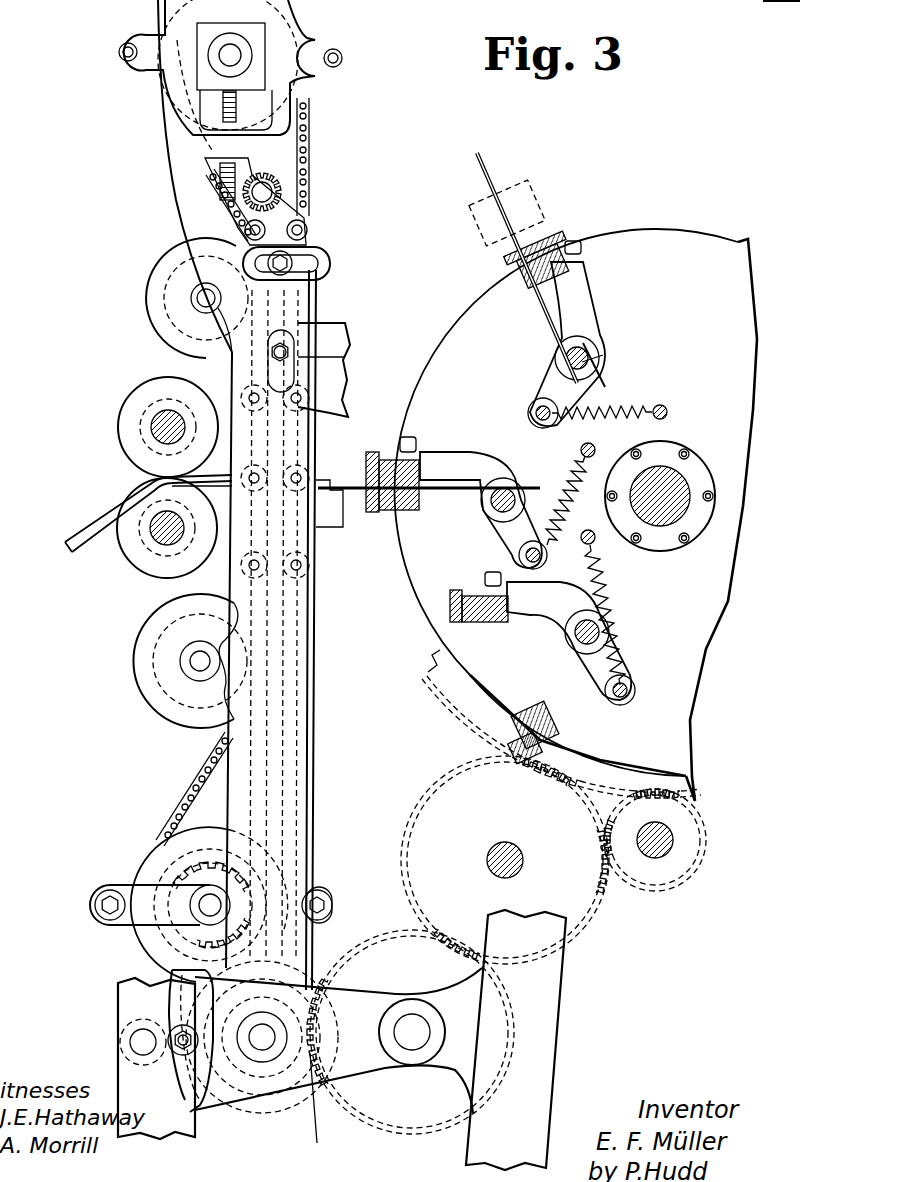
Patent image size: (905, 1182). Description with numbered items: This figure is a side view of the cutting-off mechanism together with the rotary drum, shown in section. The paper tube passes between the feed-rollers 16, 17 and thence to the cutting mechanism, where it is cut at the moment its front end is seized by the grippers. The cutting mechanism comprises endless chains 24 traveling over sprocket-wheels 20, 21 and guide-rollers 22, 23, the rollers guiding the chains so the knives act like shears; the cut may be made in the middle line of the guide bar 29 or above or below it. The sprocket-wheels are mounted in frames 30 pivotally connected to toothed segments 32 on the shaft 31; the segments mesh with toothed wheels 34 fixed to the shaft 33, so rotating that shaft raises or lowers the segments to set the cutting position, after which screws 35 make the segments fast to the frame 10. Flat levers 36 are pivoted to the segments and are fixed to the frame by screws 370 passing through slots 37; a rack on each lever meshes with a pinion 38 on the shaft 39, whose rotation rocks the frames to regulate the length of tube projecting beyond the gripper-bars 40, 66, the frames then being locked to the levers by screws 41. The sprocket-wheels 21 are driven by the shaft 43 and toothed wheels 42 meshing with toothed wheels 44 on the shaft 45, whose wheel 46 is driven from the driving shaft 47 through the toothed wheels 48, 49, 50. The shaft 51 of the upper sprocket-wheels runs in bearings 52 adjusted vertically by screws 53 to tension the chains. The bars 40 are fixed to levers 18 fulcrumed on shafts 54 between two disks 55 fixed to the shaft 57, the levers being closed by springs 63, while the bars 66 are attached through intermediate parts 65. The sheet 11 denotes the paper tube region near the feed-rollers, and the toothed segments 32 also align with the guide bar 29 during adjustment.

The frame 10 is at (342, 746).
The sheet 11 is at (148, 526).
The feed-roller 16 is at (168, 427).
The feed-roller 17 is at (167, 528).
The lever 18 is at (527, 483).
The sprocket-wheel 20 is at (300, 30).
The sprocket-wheel 21 is at (209, 904).
The guide-roller 22 is at (184, 299).
The guide-roller 23 is at (190, 661).
The endless chain 24 is at (242, 472).
The guide bar 29 is at (202, 494).
The frame 30 is at (161, 462).
The shaft 31 is at (412, 1032).
The toothed segment 32 is at (327, 1032).
The shaft 33 is at (143, 1042).
The toothed wheel 34 is at (143, 1032).
The screw 35 is at (180, 1041).
The flat lever 36 is at (288, 618).
The slot 37 is at (300, 357).
The screw 370 is at (300, 383).
The pinion 38 is at (255, 200).
The shaft 39 is at (262, 192).
The gripper-bar 40 is at (470, 417).
The screw 41 is at (295, 258).
The toothed wheel 42 is at (207, 903).
The shaft 43 is at (210, 905).
The toothed wheel 44 is at (334, 1044).
The shaft 45 is at (262, 1037).
The wheel 46 is at (320, 1107).
The driving shaft 47 is at (655, 851).
The toothed wheel 48 is at (655, 840).
The toothed wheel 49 is at (505, 860).
The toothed wheel 50 is at (412, 1032).
The shaft 51 is at (230, 55).
The bearing 52 is at (231, 48).
The screw 53 is at (240, 106).
The shaft 54 is at (598, 360).
The disk 55 is at (576, 515).
The shaft 57 is at (660, 496).
The spring 63 is at (606, 533).
The intermediate part 65 is at (429, 509).
The gripper-bar 66 is at (521, 268).